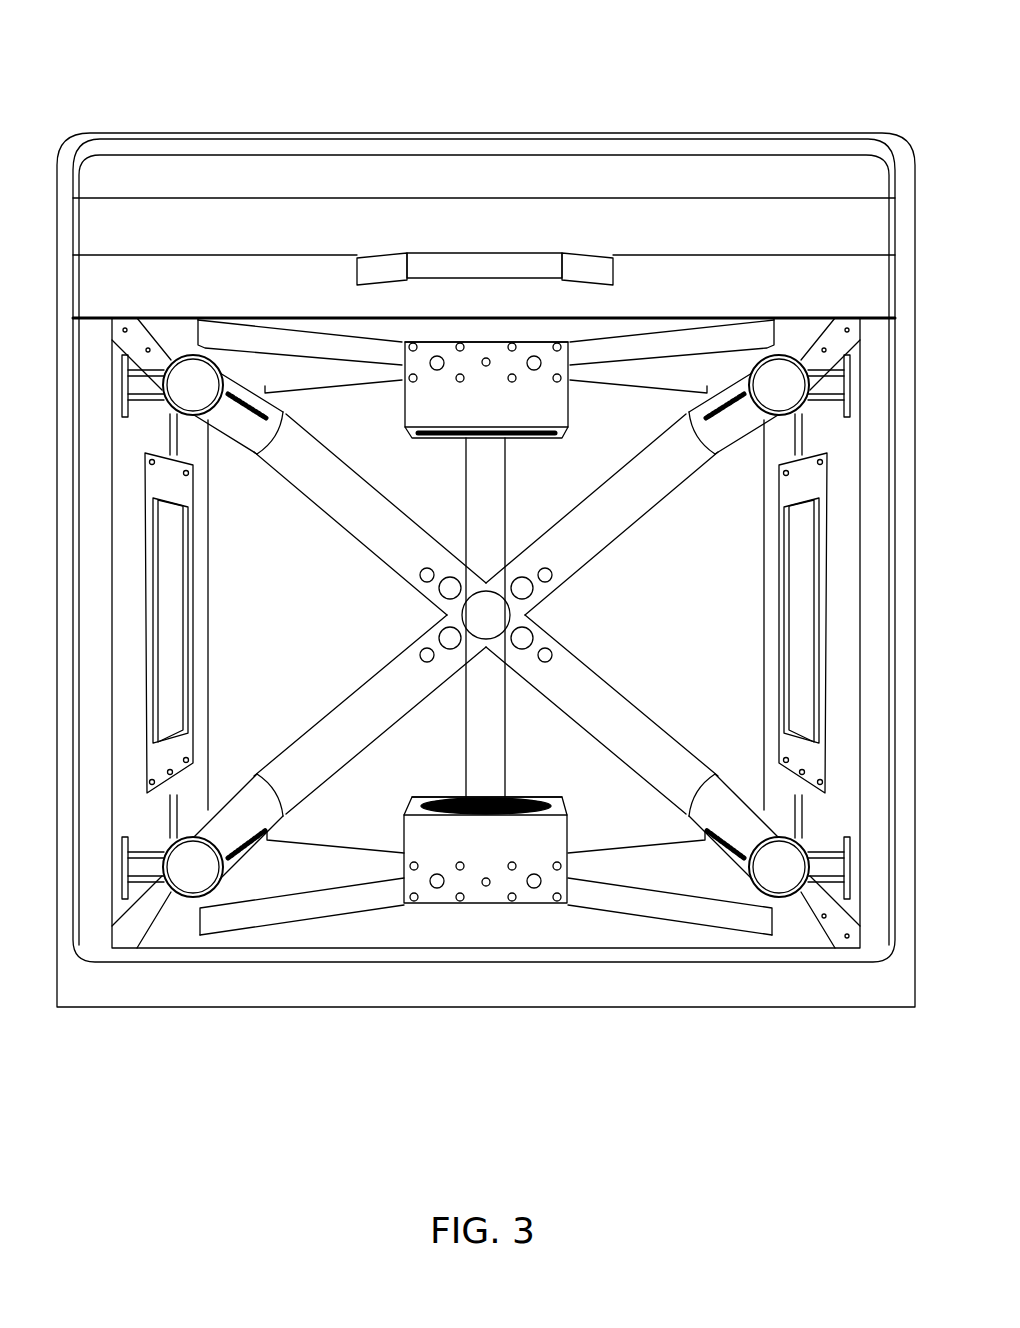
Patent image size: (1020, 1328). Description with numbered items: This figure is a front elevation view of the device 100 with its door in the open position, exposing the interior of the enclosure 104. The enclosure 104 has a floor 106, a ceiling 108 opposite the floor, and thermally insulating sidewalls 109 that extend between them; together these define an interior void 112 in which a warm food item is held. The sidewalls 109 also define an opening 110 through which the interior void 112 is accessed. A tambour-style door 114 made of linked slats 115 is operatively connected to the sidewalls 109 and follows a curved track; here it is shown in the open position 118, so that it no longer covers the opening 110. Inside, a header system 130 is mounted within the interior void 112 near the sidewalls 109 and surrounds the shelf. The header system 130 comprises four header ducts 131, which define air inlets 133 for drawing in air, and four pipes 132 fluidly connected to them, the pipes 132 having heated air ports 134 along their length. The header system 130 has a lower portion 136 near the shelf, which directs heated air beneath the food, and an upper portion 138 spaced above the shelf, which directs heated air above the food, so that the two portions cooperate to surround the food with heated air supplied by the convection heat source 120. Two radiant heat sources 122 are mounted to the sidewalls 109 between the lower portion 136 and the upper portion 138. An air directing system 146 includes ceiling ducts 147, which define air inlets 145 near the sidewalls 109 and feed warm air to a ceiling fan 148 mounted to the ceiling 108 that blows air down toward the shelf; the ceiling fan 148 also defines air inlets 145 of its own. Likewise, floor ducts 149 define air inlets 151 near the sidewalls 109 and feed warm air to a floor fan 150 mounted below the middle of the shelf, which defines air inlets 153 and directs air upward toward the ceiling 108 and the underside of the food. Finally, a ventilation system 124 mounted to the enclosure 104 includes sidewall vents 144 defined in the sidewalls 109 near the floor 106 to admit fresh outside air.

The device 100 is at (76, 70).
The enclosure 104 is at (766, 434).
The floor 106 is at (150, 935).
The ceiling 108 is at (178, 332).
The sidewalls 109 is at (250, 604).
The opening 110 is at (155, 965).
The interior void 112 is at (97, 634).
The door 114 is at (188, 173).
The linked slats 115 is at (240, 215).
The open position 118 is at (392, 137).
The convection heat source 120 is at (574, 417).
The radiant heat source 122 is at (197, 490).
The ventilation system 124 is at (797, 839).
The header system 130 is at (486, 593).
The header ducts 131 is at (343, 480).
The pipes 132 is at (268, 440).
The air inlets 133 is at (546, 582).
The heated air ports 134 is at (272, 410).
The lower portion 136 is at (289, 832).
The upper portion 138 is at (297, 502).
The sidewall vents 144 is at (166, 841).
The air inlets 145 is at (792, 335).
The air directing system 146 is at (541, 787).
The ceiling ducts 147 is at (658, 370).
The ceiling fan 148 is at (540, 412).
The floor ducts 149 is at (630, 858).
The floor fan 150 is at (558, 820).
The air inlets 151 is at (768, 926).
The air inlets 153 is at (458, 858).